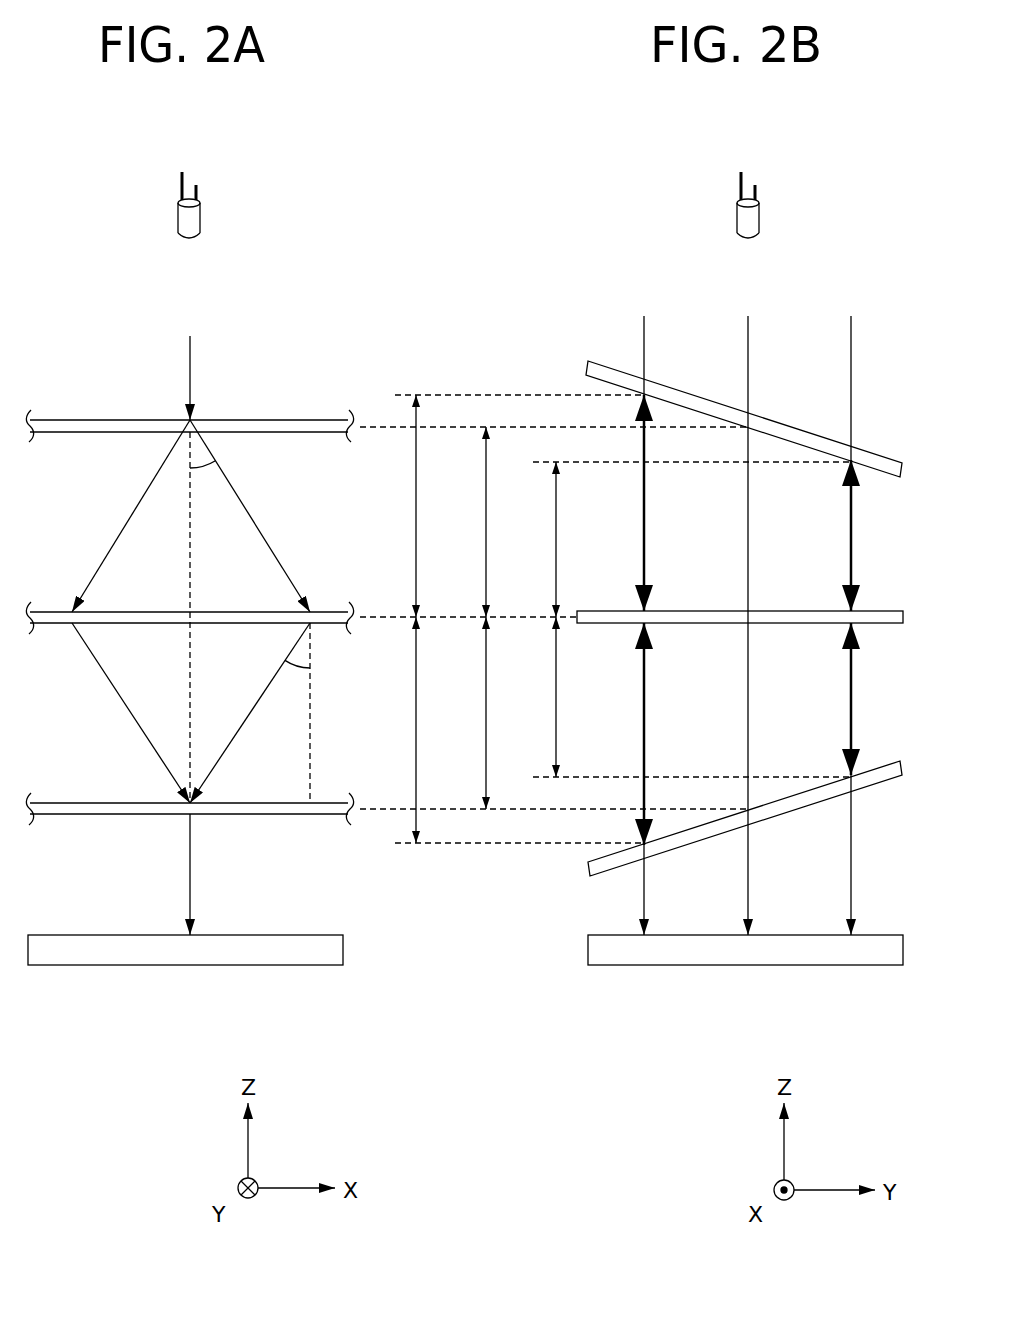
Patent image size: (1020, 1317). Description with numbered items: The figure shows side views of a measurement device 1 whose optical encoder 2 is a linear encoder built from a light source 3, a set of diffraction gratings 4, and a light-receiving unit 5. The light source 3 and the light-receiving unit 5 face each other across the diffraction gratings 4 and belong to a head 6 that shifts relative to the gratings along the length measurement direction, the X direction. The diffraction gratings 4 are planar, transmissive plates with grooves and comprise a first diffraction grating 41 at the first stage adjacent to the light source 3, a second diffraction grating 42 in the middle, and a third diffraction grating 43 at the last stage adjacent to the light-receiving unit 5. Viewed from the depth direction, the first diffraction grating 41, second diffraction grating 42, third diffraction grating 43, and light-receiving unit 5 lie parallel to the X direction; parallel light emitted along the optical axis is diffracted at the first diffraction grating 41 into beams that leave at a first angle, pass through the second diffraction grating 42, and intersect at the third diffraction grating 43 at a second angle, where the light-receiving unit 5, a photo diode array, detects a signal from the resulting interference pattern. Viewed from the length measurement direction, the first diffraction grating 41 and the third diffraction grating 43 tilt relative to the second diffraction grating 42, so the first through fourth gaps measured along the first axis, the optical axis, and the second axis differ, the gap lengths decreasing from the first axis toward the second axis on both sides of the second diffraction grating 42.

In FIG. 2A, the measurement device 1 is at (113, 185).
In FIG. 2B, the measurement device 1 is at (562, 185).
In FIG. 2A, the optical encoder 2 is at (82, 250).
In FIG. 2B, the optical encoder 2 is at (540, 250).
In FIG. 2A, the light source 3 is at (200, 212).
In FIG. 2B, the light source 3 is at (759, 212).
In FIG. 2A, the diffraction gratings 4 is at (186, 588).
In FIG. 2B, the diffraction gratings 4 is at (711, 610).
In FIG. 2A, the first diffraction grating 41 is at (97, 418).
In FIG. 2B, the first diffraction grating 41 is at (590, 360).
In FIG. 2A, the second diffraction grating 42 is at (60, 610).
In FIG. 2B, the second diffraction grating 42 is at (613, 610).
In FIG. 2A, the third diffraction grating 43 is at (93, 802).
In FIG. 2B, the third diffraction grating 43 is at (590, 870).
In FIG. 2A, the light-receiving unit 5 is at (255, 967).
In FIG. 2B, the light-receiving unit 5 is at (828, 967).
In FIG. 2A, the head 6 is at (186, 608).
In FIG. 2B, the head 6 is at (631, 608).